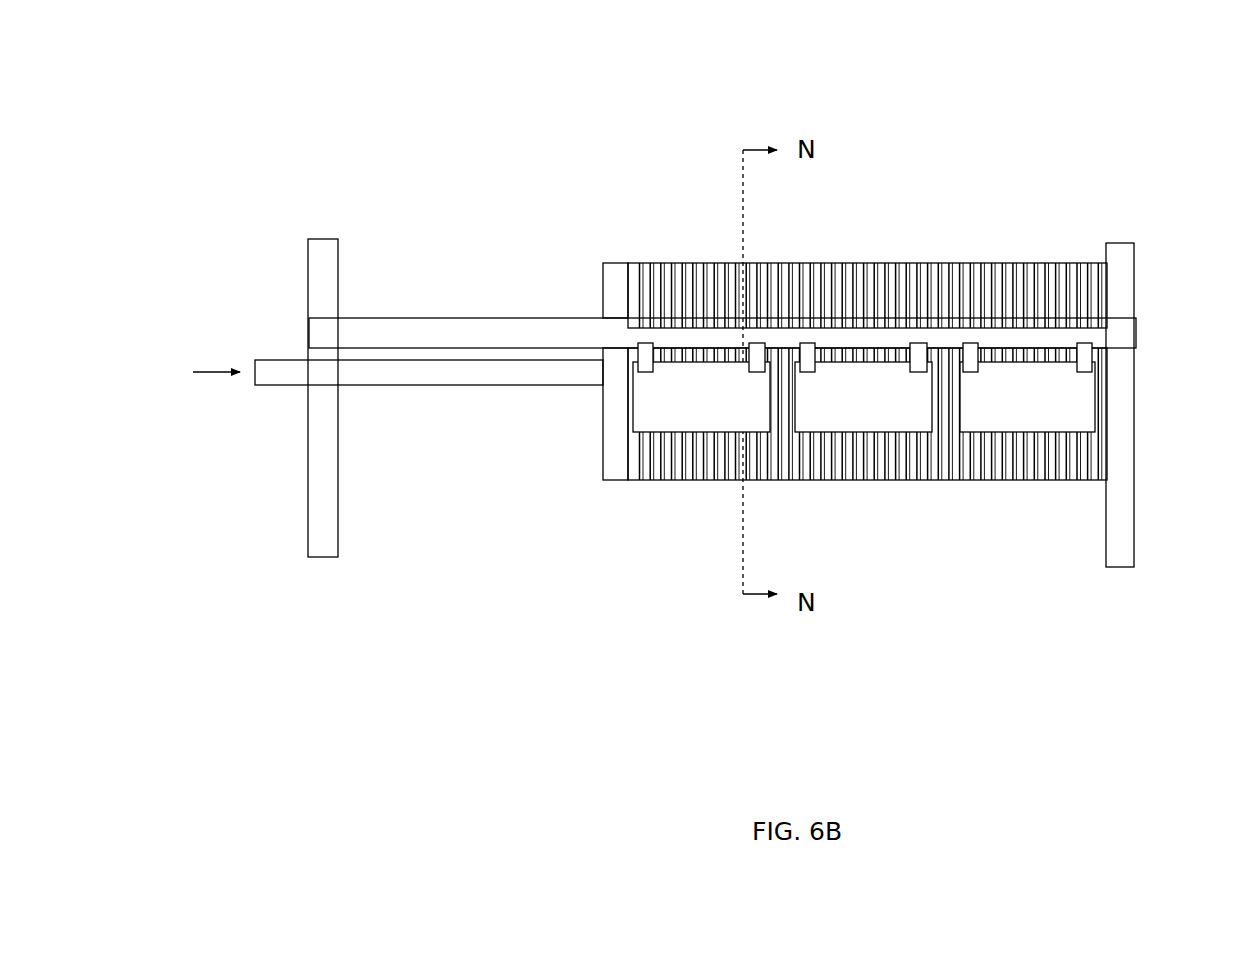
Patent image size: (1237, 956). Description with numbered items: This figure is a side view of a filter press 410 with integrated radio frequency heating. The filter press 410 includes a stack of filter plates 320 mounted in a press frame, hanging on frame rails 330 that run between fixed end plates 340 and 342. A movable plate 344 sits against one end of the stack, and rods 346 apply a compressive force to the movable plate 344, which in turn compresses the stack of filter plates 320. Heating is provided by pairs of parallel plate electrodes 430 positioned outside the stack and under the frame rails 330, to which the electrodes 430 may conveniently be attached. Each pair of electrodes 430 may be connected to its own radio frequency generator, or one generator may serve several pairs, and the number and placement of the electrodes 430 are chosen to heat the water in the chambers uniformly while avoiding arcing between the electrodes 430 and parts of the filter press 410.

The filter press 410 is at (576, 148).
The frame rails 330 is at (543, 328).
The rods 346 is at (290, 372).
The fixed end plate 340 is at (308, 306).
The fixed end plate 342 is at (1118, 403).
The movable plate 344 is at (606, 290).
The filter plates 320 is at (687, 455).
The parallel plate electrodes 430 is at (1027, 403).